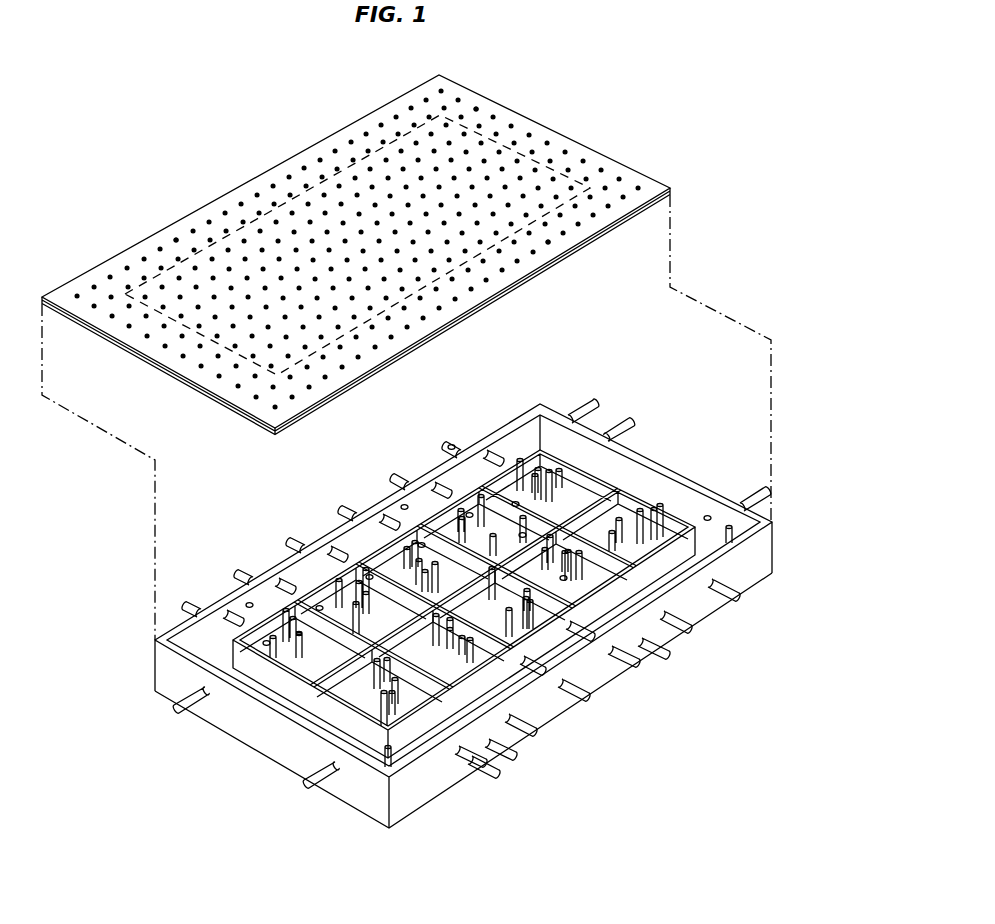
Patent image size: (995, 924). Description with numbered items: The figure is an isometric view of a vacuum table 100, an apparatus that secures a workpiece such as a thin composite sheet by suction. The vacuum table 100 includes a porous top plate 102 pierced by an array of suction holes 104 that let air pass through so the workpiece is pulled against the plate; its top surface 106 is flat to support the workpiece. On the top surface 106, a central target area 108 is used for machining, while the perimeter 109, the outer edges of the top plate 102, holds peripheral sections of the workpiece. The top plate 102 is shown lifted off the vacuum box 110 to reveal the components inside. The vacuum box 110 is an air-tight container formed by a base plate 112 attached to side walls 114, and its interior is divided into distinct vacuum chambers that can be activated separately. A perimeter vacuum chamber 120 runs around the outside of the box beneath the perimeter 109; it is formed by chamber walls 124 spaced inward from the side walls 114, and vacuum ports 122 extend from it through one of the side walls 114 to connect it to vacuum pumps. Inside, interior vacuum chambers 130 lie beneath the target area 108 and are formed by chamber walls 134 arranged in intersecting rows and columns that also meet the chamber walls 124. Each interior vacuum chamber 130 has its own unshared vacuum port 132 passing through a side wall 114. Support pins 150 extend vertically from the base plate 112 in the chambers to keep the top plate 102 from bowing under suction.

The vacuum table 100 is at (160, 66).
The top plate 102 is at (635, 167).
The suction holes 104 is at (520, 160).
The top surface 106 is at (594, 158).
The target area 108 is at (338, 206).
The perimeter 109 is at (468, 106).
The vacuum box 110 is at (184, 752).
The base plate 112 is at (420, 834).
The side walls 114 is at (460, 440).
The perimeter vacuum chamber 120 is at (298, 580).
The vacuum ports 122 is at (618, 425).
The chamber walls 124 is at (606, 485).
The interior vacuum chambers 130 is at (571, 477).
The vacuum ports 132 is at (452, 446).
The chamber walls 134 is at (512, 504).
The support pins 150 is at (742, 555).